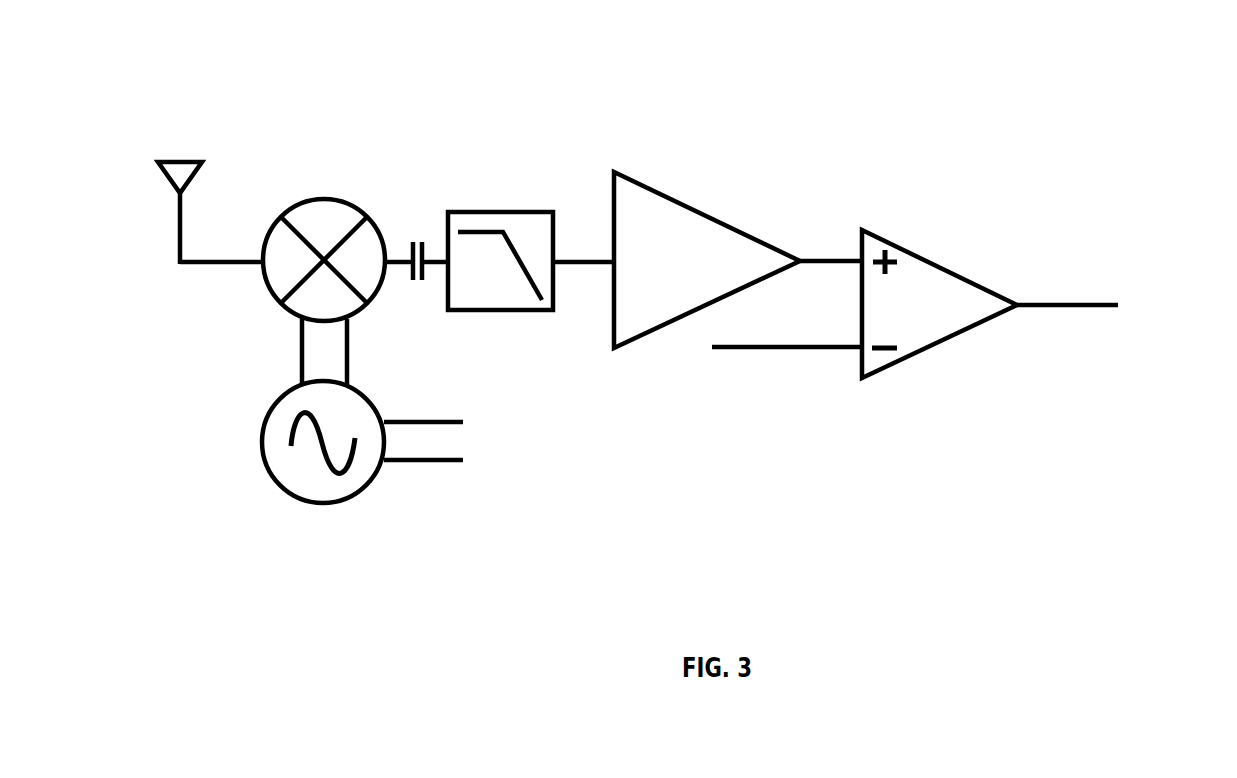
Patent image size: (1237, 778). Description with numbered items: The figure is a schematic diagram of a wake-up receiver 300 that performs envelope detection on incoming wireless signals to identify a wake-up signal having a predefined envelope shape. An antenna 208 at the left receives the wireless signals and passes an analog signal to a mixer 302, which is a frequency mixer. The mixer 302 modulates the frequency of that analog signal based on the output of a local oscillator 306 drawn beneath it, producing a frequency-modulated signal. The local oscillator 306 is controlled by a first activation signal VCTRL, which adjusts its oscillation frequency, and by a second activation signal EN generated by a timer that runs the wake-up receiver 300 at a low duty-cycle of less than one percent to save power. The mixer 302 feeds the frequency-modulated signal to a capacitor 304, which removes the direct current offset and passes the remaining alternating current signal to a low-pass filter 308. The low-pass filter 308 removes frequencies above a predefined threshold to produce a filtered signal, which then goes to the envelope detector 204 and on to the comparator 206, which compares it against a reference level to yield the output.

The wake-up receiver 300 is at (1085, 143).
The antenna 208 is at (185, 158).
The mixer 302 is at (322, 202).
The capacitor 304 is at (412, 240).
The local oscillator 306 is at (345, 503).
The low-pass filter 308 is at (493, 208).
The envelope detector 204 is at (697, 210).
The comparator 206 is at (935, 263).